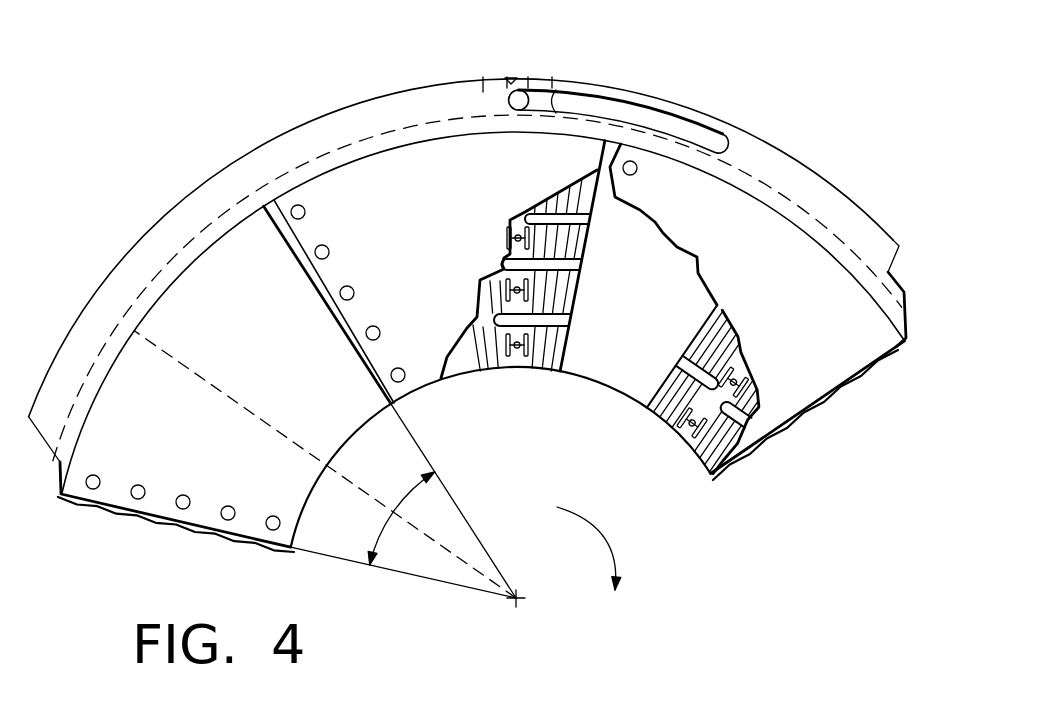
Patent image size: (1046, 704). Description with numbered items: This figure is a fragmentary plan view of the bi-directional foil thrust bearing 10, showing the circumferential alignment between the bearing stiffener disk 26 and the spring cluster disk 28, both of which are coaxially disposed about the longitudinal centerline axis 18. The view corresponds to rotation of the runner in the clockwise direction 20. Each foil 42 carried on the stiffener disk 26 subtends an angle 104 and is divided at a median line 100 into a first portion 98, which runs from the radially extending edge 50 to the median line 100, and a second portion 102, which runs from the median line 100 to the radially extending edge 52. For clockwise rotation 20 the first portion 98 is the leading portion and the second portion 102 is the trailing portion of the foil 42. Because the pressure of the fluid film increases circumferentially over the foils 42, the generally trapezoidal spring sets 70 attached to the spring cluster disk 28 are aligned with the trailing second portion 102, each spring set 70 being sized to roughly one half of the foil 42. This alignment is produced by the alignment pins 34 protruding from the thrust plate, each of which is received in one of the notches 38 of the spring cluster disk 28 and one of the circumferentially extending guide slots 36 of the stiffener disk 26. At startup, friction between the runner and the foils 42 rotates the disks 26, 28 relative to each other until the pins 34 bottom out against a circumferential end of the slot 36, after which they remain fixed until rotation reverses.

The bi-directional foil thrust bearing 10 is at (647, 52).
The longitudinal centerline axis 18 is at (523, 602).
The clockwise direction arrow 20 is at (590, 527).
The bearing stiffener disk 26 is at (773, 160).
The spring cluster disk 28 is at (618, 378).
The alignment pins 34 is at (474, 114).
The guide slots 36 is at (663, 110).
The notches 38 is at (522, 72).
The foils 42 is at (408, 160).
The radially extending edge 50 is at (150, 515).
The radially extending edge 52 is at (293, 250).
The spring sets 70 is at (517, 378).
The first portion 98 is at (197, 470).
The median line 100 is at (232, 393).
The second portion 102 is at (245, 319).
The angle 104 is at (445, 504).